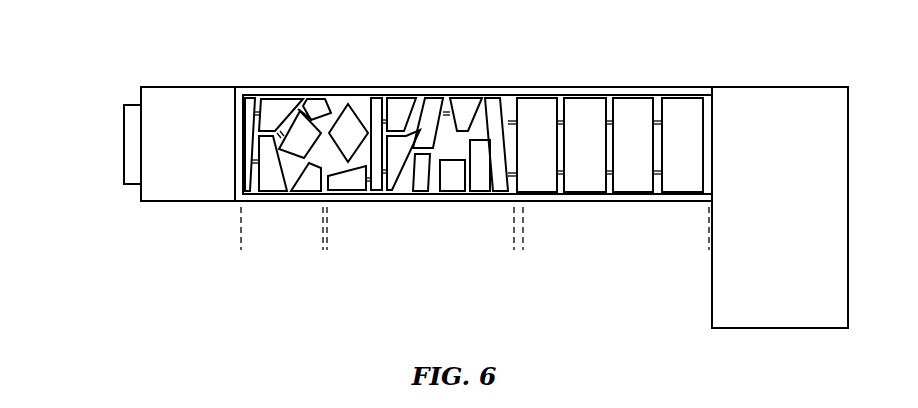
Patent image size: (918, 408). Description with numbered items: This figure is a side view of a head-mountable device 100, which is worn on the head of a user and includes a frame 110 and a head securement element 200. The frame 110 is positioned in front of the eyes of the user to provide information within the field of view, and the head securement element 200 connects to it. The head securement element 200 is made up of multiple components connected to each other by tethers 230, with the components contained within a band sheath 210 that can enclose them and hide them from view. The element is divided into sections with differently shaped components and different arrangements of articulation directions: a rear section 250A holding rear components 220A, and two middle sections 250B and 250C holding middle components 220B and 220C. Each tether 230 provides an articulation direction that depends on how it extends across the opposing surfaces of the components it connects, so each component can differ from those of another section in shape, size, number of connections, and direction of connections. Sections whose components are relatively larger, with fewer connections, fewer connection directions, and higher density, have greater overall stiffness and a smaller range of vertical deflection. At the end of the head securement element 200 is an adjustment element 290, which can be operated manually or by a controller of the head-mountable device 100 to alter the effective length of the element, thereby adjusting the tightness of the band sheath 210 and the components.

The head-mountable device 100 is at (119, 48).
The frame 110 is at (778, 87).
The head securement element 200 is at (186, 87).
The band sheath 210 is at (242, 94).
The rear components 220A is at (322, 102).
The middle components 220B is at (357, 100).
The middle components 220C is at (592, 98).
The tether 230 is at (514, 178).
The rear section 250A is at (241, 250).
The middle section 250B is at (327, 250).
The middle section 250C is at (709, 250).
The adjustment element 290 is at (124, 146).